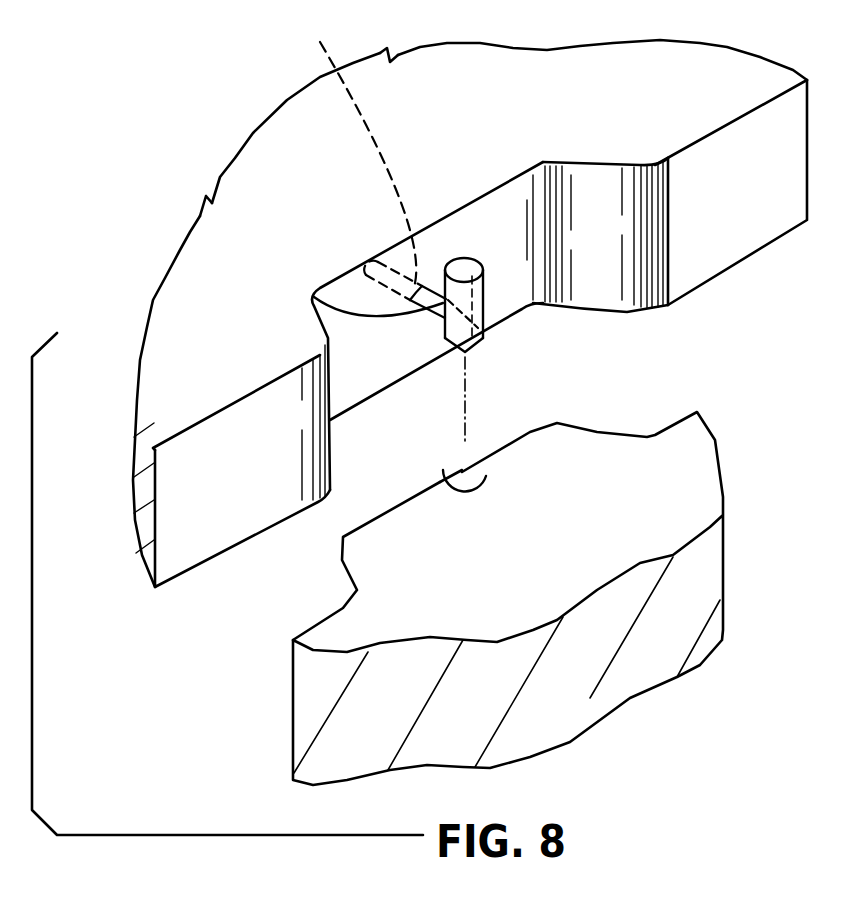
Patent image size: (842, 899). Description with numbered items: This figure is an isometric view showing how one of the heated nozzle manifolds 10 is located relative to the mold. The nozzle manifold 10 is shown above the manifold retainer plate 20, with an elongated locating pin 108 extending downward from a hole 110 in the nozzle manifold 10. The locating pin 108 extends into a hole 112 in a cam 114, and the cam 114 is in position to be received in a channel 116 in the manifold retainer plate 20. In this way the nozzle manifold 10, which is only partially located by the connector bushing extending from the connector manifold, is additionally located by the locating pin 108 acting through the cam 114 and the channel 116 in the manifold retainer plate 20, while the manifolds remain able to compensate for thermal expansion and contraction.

The nozzle manifold 10 is at (298, 127).
The manifold retainer plate 20 is at (700, 567).
The locating pin 108 is at (300, 296).
The hole 110 is at (348, 156).
The hole 112 is at (484, 316).
The cam 114 is at (486, 300).
The channel 116 is at (453, 483).